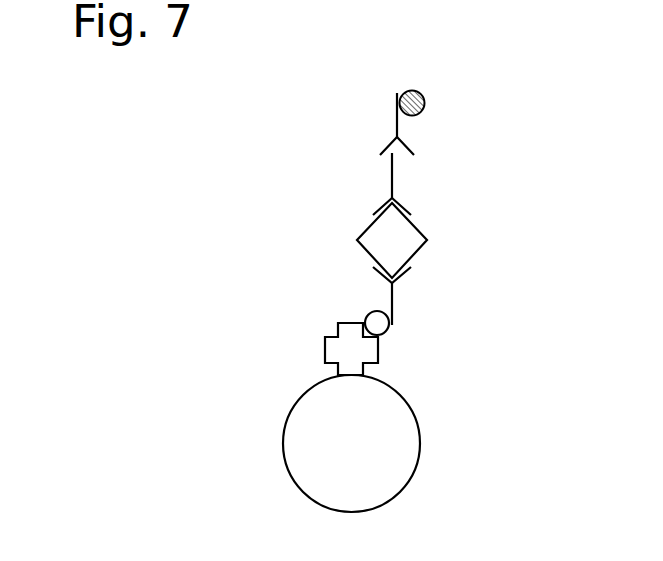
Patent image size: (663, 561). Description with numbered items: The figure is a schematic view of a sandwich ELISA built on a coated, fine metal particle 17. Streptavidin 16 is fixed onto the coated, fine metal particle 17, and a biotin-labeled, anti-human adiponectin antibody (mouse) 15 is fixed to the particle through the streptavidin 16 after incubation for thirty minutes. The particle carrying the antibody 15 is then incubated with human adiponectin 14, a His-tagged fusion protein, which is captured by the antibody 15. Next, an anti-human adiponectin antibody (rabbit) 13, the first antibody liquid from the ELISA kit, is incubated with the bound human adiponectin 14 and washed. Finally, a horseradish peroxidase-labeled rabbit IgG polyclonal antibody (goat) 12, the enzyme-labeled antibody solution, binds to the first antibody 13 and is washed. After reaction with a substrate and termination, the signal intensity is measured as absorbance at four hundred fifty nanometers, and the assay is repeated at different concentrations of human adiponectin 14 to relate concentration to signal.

The enzyme-labeled antibody 12 is at (428, 122).
The first antibody 13 is at (405, 178).
The human adiponectin 14 is at (435, 236).
The biotin-labeled anti-human adiponectin antibody 15 is at (405, 293).
The streptavidin 16 is at (383, 353).
The coated fine metal particle 17 is at (427, 432).